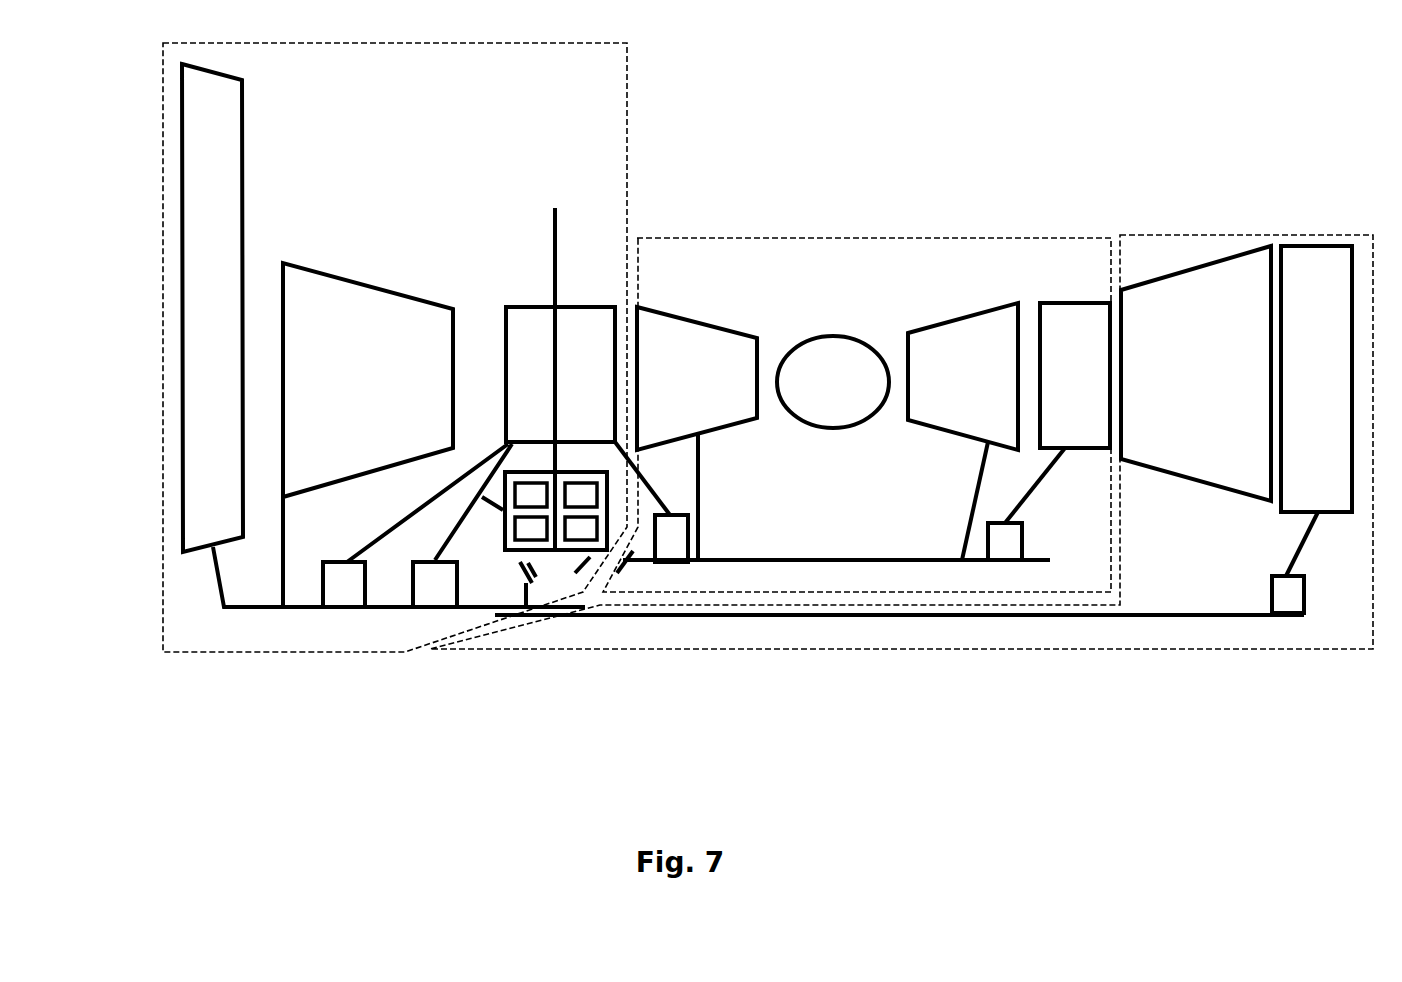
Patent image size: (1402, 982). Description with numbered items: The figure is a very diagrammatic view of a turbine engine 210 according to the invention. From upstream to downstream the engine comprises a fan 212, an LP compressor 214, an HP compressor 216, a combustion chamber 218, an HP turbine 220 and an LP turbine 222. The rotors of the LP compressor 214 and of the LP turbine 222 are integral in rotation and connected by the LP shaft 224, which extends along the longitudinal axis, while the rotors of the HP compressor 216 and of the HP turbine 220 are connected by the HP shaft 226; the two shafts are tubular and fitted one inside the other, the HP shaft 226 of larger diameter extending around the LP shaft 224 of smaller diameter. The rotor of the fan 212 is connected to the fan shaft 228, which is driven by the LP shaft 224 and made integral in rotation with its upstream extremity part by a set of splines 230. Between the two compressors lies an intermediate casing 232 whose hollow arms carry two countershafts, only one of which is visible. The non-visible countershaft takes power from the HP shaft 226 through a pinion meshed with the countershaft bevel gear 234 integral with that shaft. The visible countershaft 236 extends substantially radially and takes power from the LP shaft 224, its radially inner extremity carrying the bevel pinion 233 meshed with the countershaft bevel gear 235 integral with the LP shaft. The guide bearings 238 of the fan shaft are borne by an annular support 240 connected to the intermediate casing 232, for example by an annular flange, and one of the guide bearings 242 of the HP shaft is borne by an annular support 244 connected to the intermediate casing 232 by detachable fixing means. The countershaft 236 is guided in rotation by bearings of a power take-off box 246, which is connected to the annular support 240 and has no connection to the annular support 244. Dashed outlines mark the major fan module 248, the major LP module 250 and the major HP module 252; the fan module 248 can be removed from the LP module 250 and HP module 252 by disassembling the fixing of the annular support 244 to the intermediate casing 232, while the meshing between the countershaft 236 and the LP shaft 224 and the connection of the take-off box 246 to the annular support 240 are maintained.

The turbine engine 210 is at (875, 205).
The fan 212 is at (243, 207).
The LP compressor 214 is at (395, 285).
The HP compressor 216 is at (672, 323).
The combustion chamber 218 is at (832, 428).
The HP turbine 220 is at (947, 320).
The LP turbine 222 is at (1190, 263).
The LP shaft 224 is at (965, 617).
The HP shaft 226 is at (758, 562).
The fan shaft 228 is at (250, 607).
The set of splines 230 is at (527, 607).
The intermediate casing 232 is at (585, 305).
The bevel pinion 233 is at (555, 552).
The countershaft bevel gear 234 is at (628, 560).
The countershaft bevel gear 235 is at (523, 587).
The countershaft 236 is at (552, 247).
The guide bearings 238 is at (435, 582).
The annular support 240 is at (502, 510).
The guide bearing 242 is at (665, 562).
The annular support 244 is at (657, 490).
The power take-off box 246 is at (573, 472).
The major fan module 248 is at (630, 110).
The major LP module 250 is at (828, 238).
The major HP module 252 is at (1253, 234).